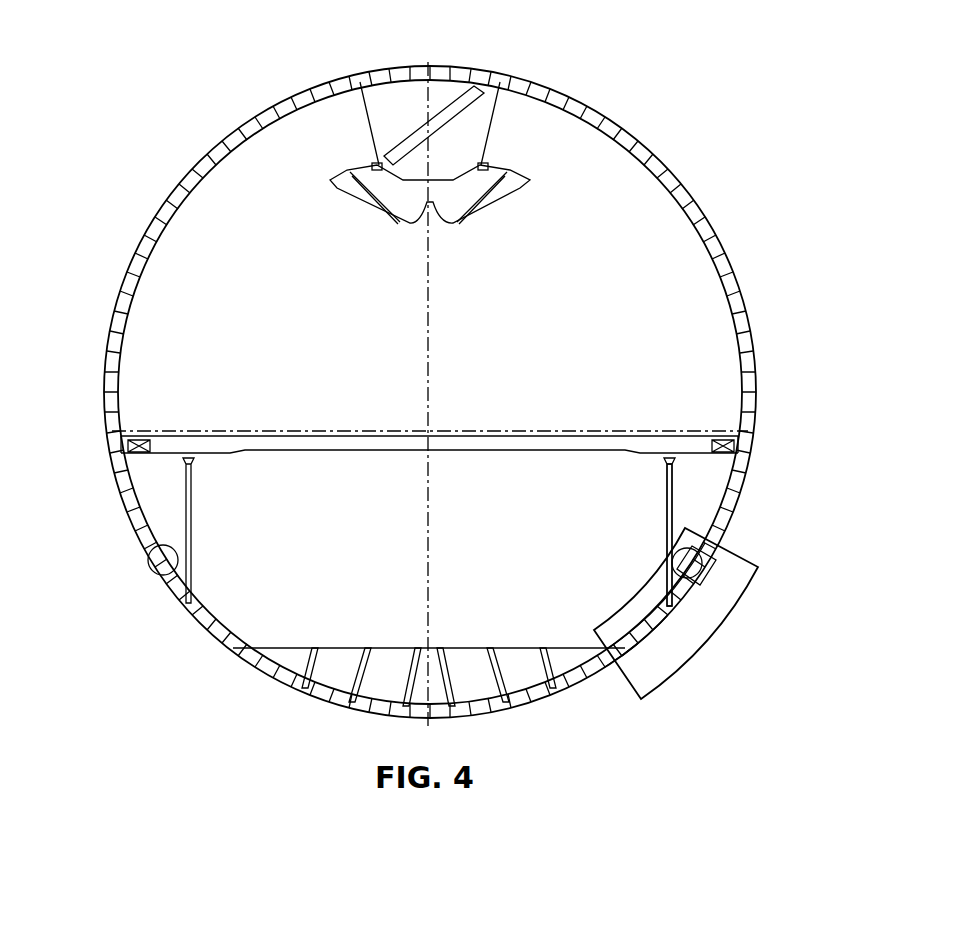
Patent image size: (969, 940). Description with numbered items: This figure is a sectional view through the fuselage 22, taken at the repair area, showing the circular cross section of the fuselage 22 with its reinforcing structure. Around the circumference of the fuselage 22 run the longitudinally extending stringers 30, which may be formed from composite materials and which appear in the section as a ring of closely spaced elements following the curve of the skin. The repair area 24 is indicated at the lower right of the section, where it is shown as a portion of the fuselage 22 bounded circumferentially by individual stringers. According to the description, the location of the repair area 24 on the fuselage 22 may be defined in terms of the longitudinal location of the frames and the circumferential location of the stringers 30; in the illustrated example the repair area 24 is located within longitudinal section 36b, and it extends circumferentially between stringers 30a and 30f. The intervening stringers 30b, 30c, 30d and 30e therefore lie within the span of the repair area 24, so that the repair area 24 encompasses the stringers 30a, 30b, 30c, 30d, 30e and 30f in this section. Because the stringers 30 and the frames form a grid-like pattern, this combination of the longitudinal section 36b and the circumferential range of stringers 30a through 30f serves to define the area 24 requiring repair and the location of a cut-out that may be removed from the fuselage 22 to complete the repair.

The fuselage 22 is at (153, 223).
The longitudinal section 36b is at (293, 130).
The stringers 30 is at (128, 305).
The repair area 24 is at (710, 637).
The stringer 30a is at (705, 572).
The stringer 30b is at (697, 589).
The stringer 30c is at (700, 590).
The stringer 30d is at (670, 612).
The stringer 30e is at (640, 638).
The stringer 30f is at (620, 652).